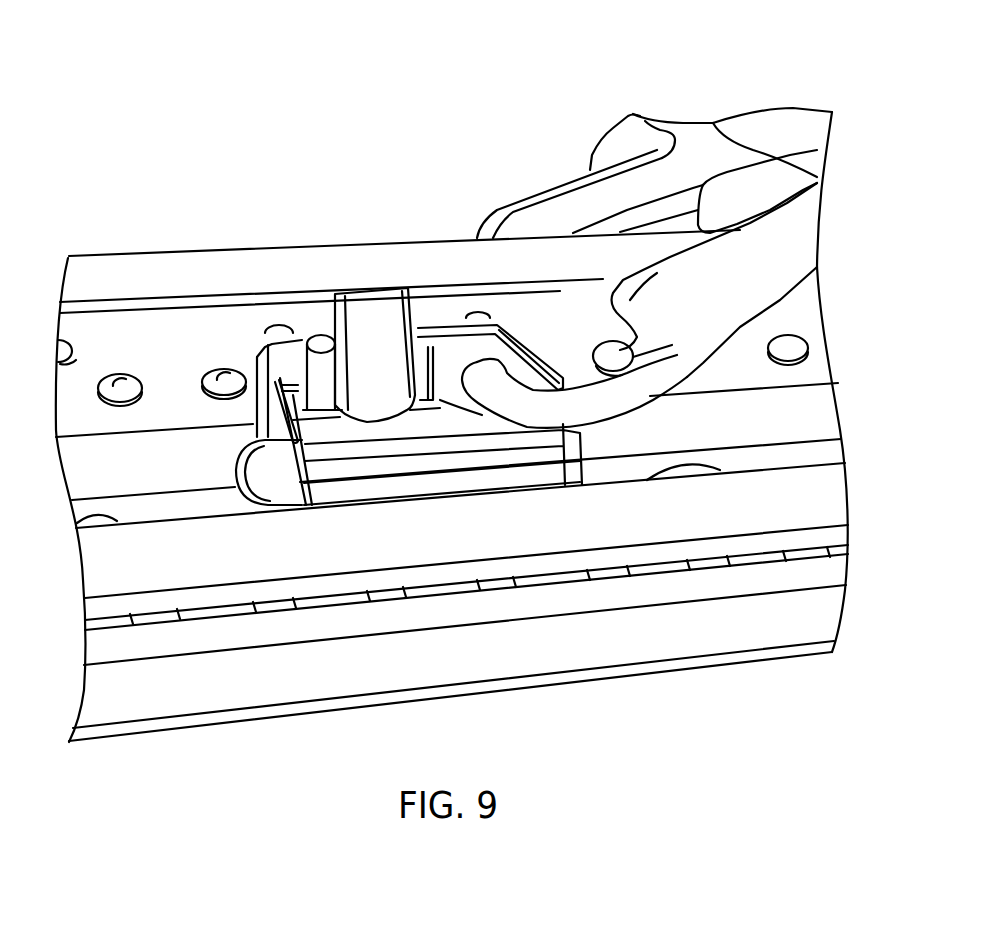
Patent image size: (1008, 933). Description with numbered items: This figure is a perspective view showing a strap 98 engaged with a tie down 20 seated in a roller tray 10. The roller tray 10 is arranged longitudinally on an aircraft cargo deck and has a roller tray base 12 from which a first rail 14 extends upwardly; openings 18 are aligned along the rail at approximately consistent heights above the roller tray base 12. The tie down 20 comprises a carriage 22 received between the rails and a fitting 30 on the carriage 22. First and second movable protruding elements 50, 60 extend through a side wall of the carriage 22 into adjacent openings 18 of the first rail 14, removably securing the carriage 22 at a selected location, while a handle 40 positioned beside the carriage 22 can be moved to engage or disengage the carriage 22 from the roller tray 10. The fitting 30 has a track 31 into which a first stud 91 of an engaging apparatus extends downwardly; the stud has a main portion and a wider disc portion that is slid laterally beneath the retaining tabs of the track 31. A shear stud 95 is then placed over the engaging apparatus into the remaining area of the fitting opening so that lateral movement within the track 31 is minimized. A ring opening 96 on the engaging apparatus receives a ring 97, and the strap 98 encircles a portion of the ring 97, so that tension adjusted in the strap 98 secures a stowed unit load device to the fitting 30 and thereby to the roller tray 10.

The roller tray 10 is at (98, 277).
The roller tray base 12 is at (82, 477).
The first rail 14 is at (98, 574).
The openings 18 is at (213, 380).
The tie down 20 is at (527, 467).
The carriage 22 is at (498, 477).
The fitting 30 is at (450, 425).
The track 31 is at (266, 357).
The handle 40 is at (240, 466).
The first movable protruding element 50 is at (383, 597).
The second movable protruding element 60 is at (498, 583).
The first stud 91 is at (323, 373).
The shear stud 95 is at (378, 330).
The ring opening 96 is at (472, 327).
The ring 97 is at (653, 378).
The strap 98 is at (737, 263).